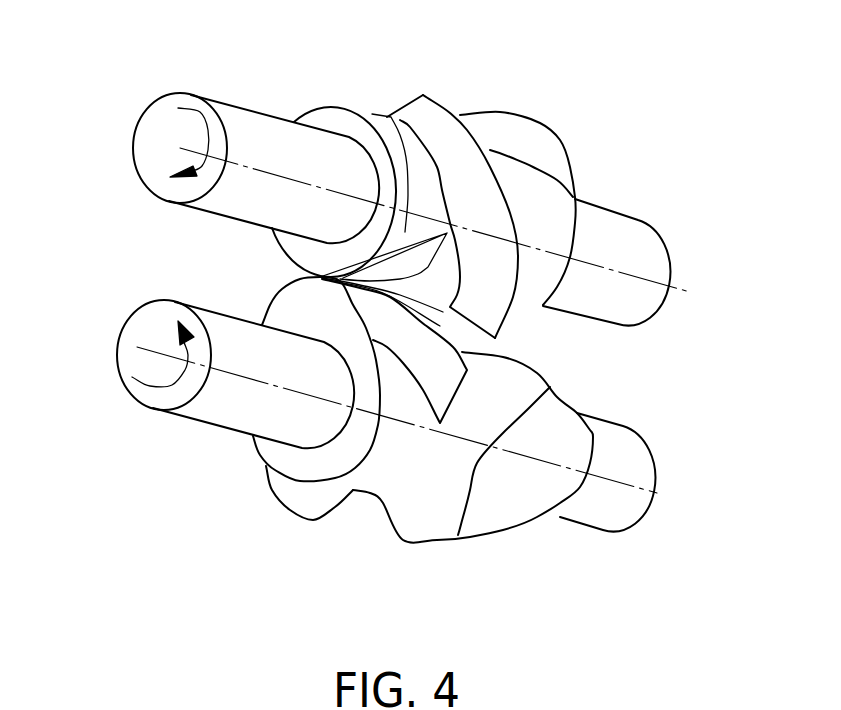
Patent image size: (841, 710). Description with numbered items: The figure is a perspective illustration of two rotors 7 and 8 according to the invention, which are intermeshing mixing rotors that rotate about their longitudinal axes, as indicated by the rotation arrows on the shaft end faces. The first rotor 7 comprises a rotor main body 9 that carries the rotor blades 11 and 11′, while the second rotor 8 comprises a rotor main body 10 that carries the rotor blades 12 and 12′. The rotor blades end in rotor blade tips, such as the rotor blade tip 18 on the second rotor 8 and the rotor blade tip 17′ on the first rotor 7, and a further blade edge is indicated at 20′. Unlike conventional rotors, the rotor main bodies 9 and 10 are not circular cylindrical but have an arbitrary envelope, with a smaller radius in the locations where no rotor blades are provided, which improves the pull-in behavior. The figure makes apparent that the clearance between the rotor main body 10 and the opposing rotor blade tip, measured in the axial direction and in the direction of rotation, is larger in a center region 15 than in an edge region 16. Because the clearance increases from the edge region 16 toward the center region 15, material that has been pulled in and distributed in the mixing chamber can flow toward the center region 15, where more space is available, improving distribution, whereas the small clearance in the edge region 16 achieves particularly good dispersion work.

The rotor 7 is at (135, 388).
The rotor 8 is at (170, 123).
The rotor main body 9 is at (387, 443).
The rotor main body 10 is at (413, 225).
The rotor blade 11 is at (307, 500).
The rotor blade 11′ is at (383, 317).
The rotor blade 12 is at (484, 195).
The rotor blade 12′ is at (545, 146).
The center region 15 is at (443, 312).
The edge region 16 is at (258, 271).
The rotor blade tip 17′ is at (440, 327).
The rotor blade tip 18 is at (483, 142).
The tooth tip 20′ is at (390, 263).